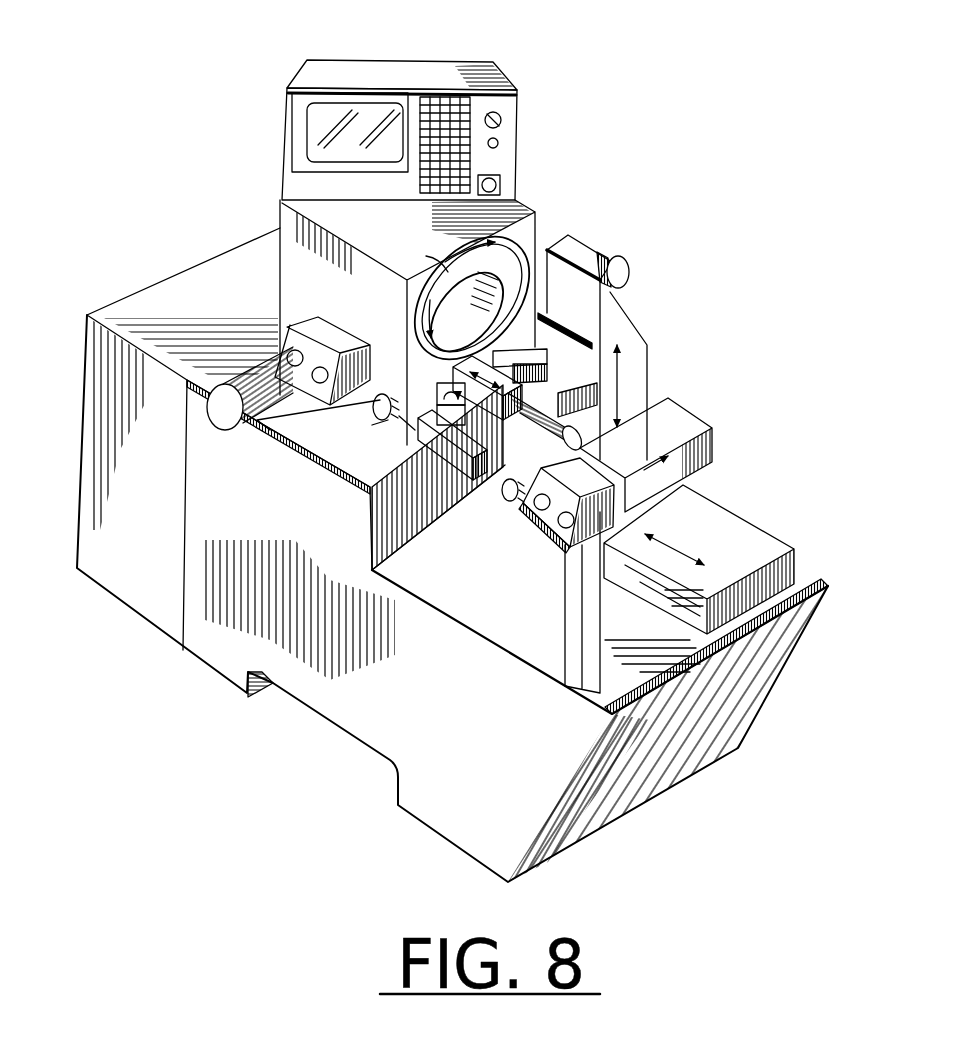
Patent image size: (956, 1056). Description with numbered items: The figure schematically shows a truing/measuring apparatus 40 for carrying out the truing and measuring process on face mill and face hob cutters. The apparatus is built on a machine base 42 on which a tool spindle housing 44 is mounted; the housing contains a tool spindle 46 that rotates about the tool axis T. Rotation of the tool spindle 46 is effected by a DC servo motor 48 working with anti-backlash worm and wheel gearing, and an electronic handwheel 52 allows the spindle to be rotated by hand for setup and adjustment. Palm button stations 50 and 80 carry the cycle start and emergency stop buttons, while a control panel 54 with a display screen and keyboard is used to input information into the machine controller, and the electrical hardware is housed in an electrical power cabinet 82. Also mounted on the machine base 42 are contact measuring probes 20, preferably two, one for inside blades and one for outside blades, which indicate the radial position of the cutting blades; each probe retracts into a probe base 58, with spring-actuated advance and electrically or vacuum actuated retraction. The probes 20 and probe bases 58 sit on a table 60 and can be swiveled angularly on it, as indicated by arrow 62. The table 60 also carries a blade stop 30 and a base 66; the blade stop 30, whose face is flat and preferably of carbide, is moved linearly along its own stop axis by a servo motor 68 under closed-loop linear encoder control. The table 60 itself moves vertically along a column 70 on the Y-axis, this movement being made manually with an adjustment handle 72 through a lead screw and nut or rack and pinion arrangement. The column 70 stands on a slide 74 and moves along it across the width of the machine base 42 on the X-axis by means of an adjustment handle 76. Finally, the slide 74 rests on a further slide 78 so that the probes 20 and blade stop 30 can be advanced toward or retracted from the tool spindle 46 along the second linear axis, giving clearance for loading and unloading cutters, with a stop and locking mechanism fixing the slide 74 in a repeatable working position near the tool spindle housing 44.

The contact measuring probe 20 is at (418, 355).
The blade stop 30 is at (415, 310).
The truing/measuring apparatus 40 is at (142, 260).
The machine base 42 is at (235, 655).
The tool spindle housing 44 is at (297, 242).
The tool spindle 46 is at (460, 277).
The DC servo motor 48 is at (230, 422).
The palm button station 50 is at (300, 317).
The electronic handwheel 52 is at (340, 470).
The control panel 54 is at (497, 72).
The probe base 58 is at (551, 350).
The table 60 is at (508, 467).
The arrow 62 is at (392, 422).
The base 66 is at (450, 425).
The servo motor 68 is at (583, 438).
The column 70 is at (633, 378).
The adjustment handle 72 is at (626, 272).
The slide 74 is at (714, 447).
The adjustment handle 76 is at (505, 505).
The slide 78 is at (765, 548).
The palm button station 80 is at (555, 522).
The electrical power cabinet 82 is at (128, 585).